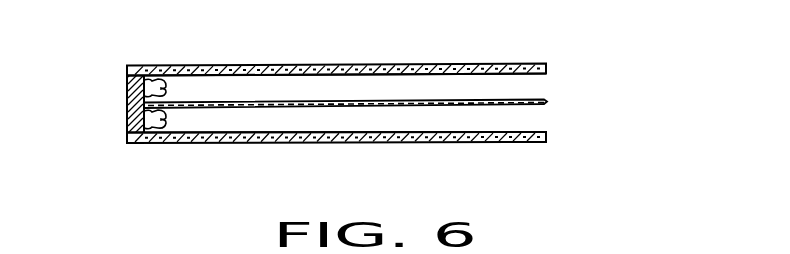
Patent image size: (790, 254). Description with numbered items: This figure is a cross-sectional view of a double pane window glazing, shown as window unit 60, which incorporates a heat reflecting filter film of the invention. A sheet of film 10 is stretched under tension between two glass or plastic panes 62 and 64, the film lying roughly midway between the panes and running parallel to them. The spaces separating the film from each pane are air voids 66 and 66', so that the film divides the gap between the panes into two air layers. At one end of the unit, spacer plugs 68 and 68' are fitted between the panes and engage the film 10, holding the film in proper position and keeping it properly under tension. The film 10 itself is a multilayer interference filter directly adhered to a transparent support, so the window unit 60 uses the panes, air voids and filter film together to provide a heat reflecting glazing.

The film 10 is at (547, 102).
The window unit 60 is at (335, 117).
The glass or plastic pane 62 is at (397, 143).
The glass or plastic pane 64 is at (308, 65).
The air void 66 is at (345, 165).
The air void 66' is at (345, 48).
The spacer plug 68 is at (113, 128).
The spacer plug 68' is at (112, 101).